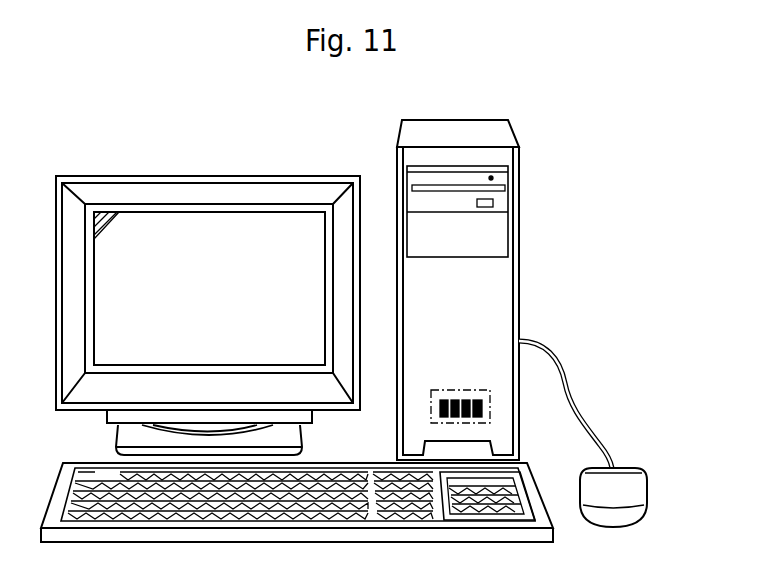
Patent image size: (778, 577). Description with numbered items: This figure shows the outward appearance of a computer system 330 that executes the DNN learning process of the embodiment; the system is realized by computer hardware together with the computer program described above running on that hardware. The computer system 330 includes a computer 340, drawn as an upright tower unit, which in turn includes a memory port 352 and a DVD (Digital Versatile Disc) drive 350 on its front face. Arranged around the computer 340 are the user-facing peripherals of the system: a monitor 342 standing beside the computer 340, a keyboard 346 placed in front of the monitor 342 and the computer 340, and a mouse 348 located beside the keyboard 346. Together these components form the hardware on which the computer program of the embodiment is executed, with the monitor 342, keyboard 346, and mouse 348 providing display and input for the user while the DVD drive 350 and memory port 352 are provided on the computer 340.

The computer system 330 is at (575, 92).
The computer 340 is at (513, 120).
The monitor 342 is at (339, 175).
The keyboard 346 is at (548, 482).
The mouse 348 is at (645, 471).
The DVD drive 350 is at (519, 185).
The memory port 352 is at (490, 413).